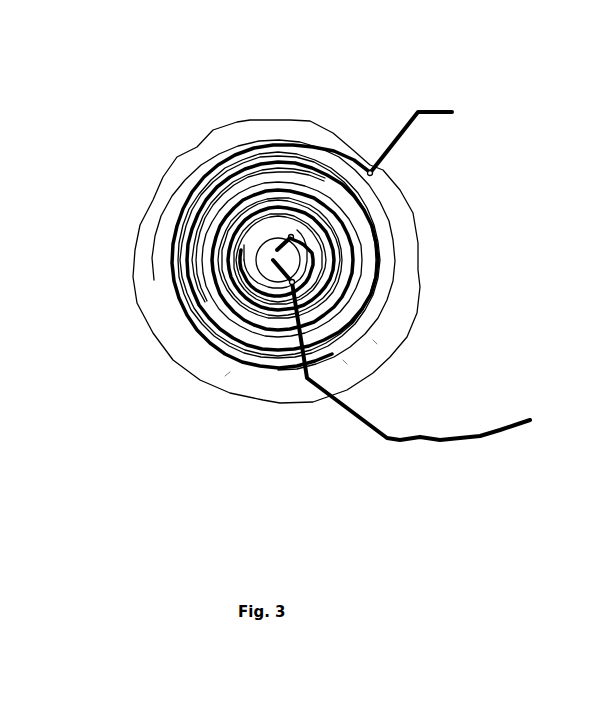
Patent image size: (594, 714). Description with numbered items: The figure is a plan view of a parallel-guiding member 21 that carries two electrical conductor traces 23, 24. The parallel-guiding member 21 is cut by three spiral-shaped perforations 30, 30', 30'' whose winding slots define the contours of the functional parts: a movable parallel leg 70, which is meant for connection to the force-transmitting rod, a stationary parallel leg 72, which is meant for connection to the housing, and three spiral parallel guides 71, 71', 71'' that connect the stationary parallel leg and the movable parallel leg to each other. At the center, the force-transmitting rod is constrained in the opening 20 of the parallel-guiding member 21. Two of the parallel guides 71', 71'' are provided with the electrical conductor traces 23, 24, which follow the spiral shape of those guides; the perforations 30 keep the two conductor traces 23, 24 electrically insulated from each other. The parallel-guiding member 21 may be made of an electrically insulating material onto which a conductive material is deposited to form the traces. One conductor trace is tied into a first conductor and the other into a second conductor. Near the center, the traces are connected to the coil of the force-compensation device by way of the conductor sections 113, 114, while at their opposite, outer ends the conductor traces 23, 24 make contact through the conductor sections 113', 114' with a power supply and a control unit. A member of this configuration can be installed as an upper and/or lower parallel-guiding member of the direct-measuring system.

The parallel-guiding member 21 is at (177, 141).
The movable parallel leg 70 is at (197, 180).
The parallel guide 71 is at (233, 274).
The parallel guide 71' is at (218, 255).
The parallel guide 71'' is at (219, 240).
The opening 20 is at (262, 252).
The conductor section 113 is at (251, 181).
The conductor section 113' is at (410, 121).
The conductor section 114 is at (211, 275).
The conductor section 114' is at (401, 370).
The spiral-shaped perforation 30 is at (258, 184).
The spiral-shaped perforation 30' is at (201, 426).
The spiral-shaped perforation 30'' is at (420, 410).
The electrical conductor trace 23 is at (345, 160).
The electrical conductor trace 24 is at (343, 360).
The stationary parallel leg 72 is at (273, 388).